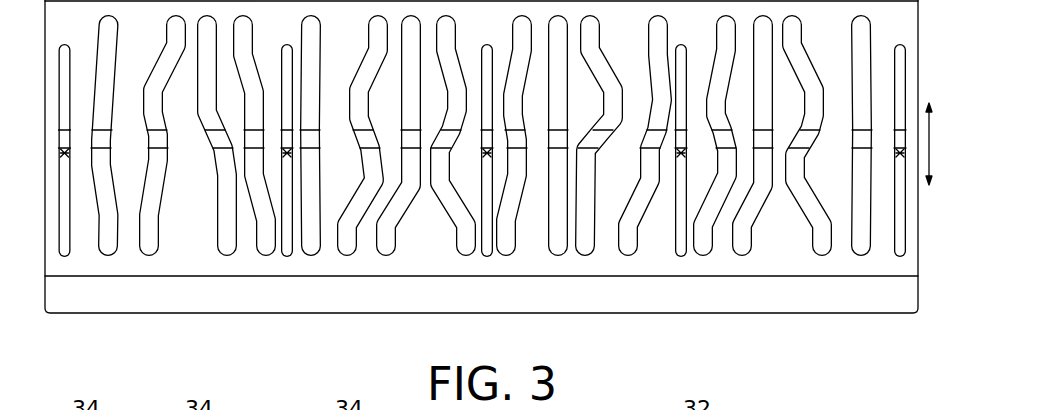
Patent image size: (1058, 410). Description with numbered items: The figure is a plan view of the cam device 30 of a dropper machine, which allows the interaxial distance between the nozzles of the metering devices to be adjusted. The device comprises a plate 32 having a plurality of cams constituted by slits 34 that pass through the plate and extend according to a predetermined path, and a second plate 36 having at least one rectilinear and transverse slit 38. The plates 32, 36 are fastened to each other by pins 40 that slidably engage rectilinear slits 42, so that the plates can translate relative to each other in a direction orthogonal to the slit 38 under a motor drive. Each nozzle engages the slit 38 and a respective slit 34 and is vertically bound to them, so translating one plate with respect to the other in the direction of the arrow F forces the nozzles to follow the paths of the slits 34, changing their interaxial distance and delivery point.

The cam device 30 is at (812, 322).
The plate 32 is at (650, 263).
The slits 34 is at (150, 235).
The second plate 36 is at (743, 303).
The rectilinear and transverse slit 38 is at (253, 142).
The pins 40 is at (65, 153).
The rectilinear slits 42 is at (64, 242).
The arrow F is at (929, 150).